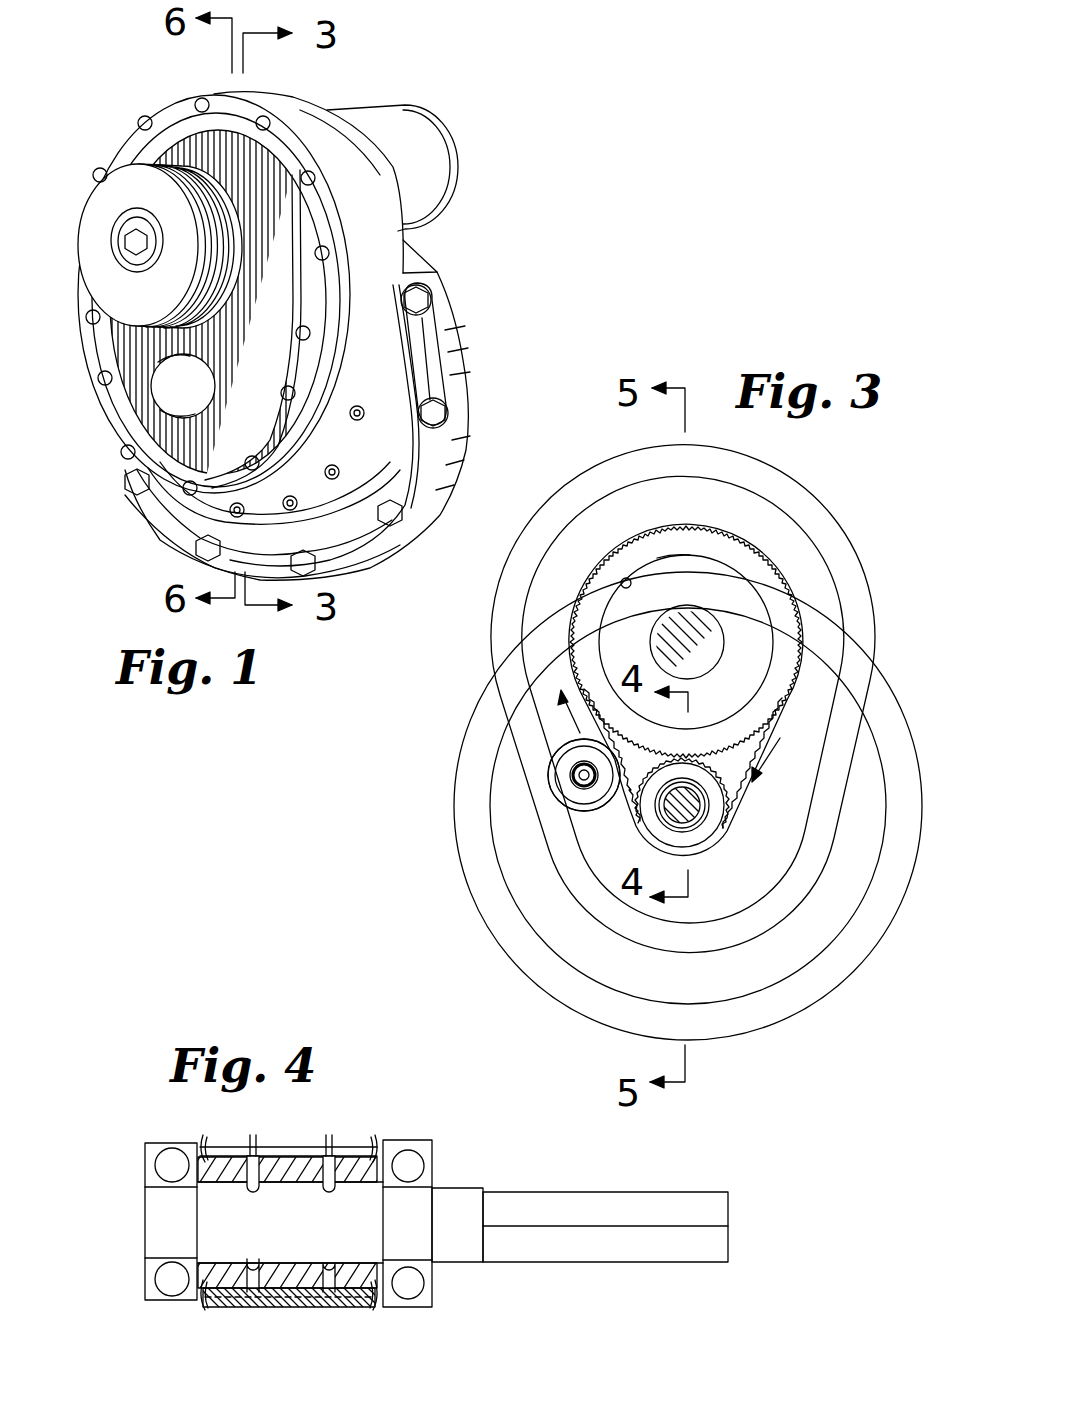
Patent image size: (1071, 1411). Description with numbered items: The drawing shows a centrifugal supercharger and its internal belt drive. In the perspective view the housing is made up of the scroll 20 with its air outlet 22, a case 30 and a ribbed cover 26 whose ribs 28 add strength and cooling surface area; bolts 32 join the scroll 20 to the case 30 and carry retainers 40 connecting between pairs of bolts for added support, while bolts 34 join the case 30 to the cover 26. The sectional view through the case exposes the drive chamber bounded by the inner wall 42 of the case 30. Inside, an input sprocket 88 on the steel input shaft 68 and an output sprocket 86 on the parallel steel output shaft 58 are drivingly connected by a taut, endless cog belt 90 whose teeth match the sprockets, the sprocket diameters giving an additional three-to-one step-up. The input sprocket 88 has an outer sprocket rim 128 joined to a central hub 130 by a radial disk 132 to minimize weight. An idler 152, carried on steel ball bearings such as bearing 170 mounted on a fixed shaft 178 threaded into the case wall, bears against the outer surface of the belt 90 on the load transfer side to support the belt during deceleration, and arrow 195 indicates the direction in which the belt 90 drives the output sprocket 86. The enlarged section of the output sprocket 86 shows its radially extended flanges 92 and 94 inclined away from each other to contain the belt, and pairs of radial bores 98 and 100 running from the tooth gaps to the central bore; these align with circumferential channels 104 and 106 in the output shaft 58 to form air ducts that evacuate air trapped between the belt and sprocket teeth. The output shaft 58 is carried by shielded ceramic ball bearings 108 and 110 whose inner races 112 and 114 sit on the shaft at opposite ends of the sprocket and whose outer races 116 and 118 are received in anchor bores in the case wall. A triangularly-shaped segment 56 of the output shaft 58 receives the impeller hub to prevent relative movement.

In FIG. 1, the scroll 20 is at (466, 464).
In FIG. 1, the air outlet 22 is at (460, 170).
In FIG. 1, the cover 26 is at (170, 103).
In FIG. 1, the ribs 28 is at (108, 147).
In FIG. 1, the case 30 is at (296, 94).
In FIG. 3, the case 30 is at (878, 640).
In FIG. 1, the bolts 32 is at (432, 293).
In FIG. 1, the bolts 34 is at (100, 378).
In FIG. 1, the retainers 40 is at (445, 356).
In FIG. 3, the inner wall 42 is at (606, 447).
In FIG. 4, the triangularly-shaped segment 56 is at (690, 1192).
In FIG. 3, the output shaft 58 is at (688, 815).
In FIG. 4, the output shaft 58 is at (472, 1182).
In FIG. 3, the input shaft 68 is at (695, 617).
In FIG. 3, the output sprocket 86 is at (726, 820).
In FIG. 3, the input sprocket 88 is at (768, 722).
In FIG. 3, the cog belt 90 is at (765, 555).
In FIG. 3, the flange 92 is at (688, 840).
In FIG. 4, the flange 92 is at (203, 1305).
In FIG. 4, the flange 94 is at (376, 1302).
In FIG. 4, the radial bores 98 is at (252, 1290).
In FIG. 4, the radial bores 100 is at (329, 1292).
In FIG. 4, the channel 104 is at (253, 1176).
In FIG. 4, the channel 106 is at (331, 1160).
In FIG. 4, the ball bearing 108 is at (138, 1164).
In FIG. 4, the ball bearing 110 is at (440, 1303).
In FIG. 4, the inner race 112 is at (146, 1258).
In FIG. 4, the inner race 114 is at (436, 1264).
In FIG. 4, the outer race 116 is at (160, 1142).
In FIG. 4, the outer race 118 is at (420, 1307).
In FIG. 3, the outer sprocket rim 128 is at (621, 581).
In FIG. 3, the central hub 130 is at (725, 640).
In FIG. 3, the radial disk 132 is at (658, 556).
In FIG. 3, the idler 152 is at (607, 812).
In FIG. 3, the ball bearing 170 is at (579, 782).
In FIG. 3, the fixed shaft 178 is at (582, 776).
In FIG. 3, the arrow 195 is at (575, 717).